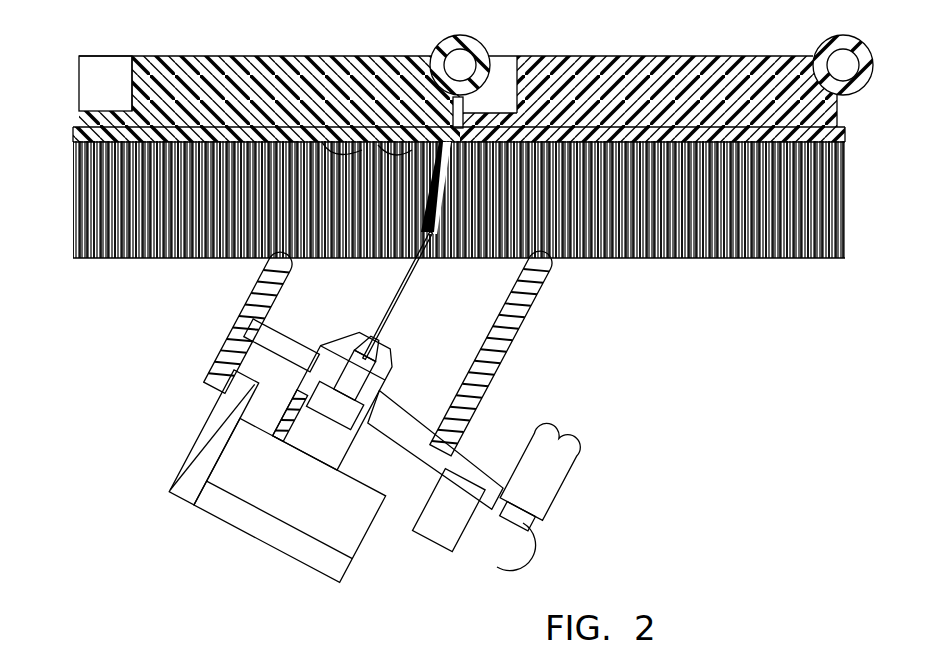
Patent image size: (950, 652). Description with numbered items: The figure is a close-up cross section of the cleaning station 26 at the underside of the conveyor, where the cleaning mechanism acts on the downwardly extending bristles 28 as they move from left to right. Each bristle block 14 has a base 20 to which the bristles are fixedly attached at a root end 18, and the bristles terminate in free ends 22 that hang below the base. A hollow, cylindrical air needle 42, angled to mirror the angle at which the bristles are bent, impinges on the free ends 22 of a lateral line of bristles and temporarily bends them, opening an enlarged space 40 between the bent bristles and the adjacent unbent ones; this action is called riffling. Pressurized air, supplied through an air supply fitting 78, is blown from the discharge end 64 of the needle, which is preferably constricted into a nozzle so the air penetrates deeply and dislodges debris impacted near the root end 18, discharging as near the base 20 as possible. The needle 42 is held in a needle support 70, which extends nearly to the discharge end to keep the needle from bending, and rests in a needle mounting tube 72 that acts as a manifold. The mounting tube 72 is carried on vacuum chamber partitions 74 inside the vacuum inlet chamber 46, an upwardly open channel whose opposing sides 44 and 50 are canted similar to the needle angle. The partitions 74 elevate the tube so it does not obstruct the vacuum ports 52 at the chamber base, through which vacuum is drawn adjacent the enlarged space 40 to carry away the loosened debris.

The bristle block 14 is at (187, 78).
The base 20 is at (275, 70).
The root end 18 is at (378, 145).
The downwardly extending bristles 28 is at (96, 191).
The free ends 22 is at (185, 258).
The enlarged space 40 is at (432, 240).
The discharge end 64 is at (418, 235).
The air needle 42 is at (398, 298).
The side of vacuum inlet chamber 44 is at (245, 310).
The side of vacuum inlet chamber 50 is at (500, 380).
The needle support 70 is at (330, 340).
The needle mounting tube 72 is at (275, 430).
The vacuum chamber partition 74 is at (398, 413).
The air supply fitting 78 is at (500, 535).
The vacuum inlet chamber 46 is at (215, 405).
The vacuum port 52 is at (220, 500).
The cleaning station 26 is at (398, 578).